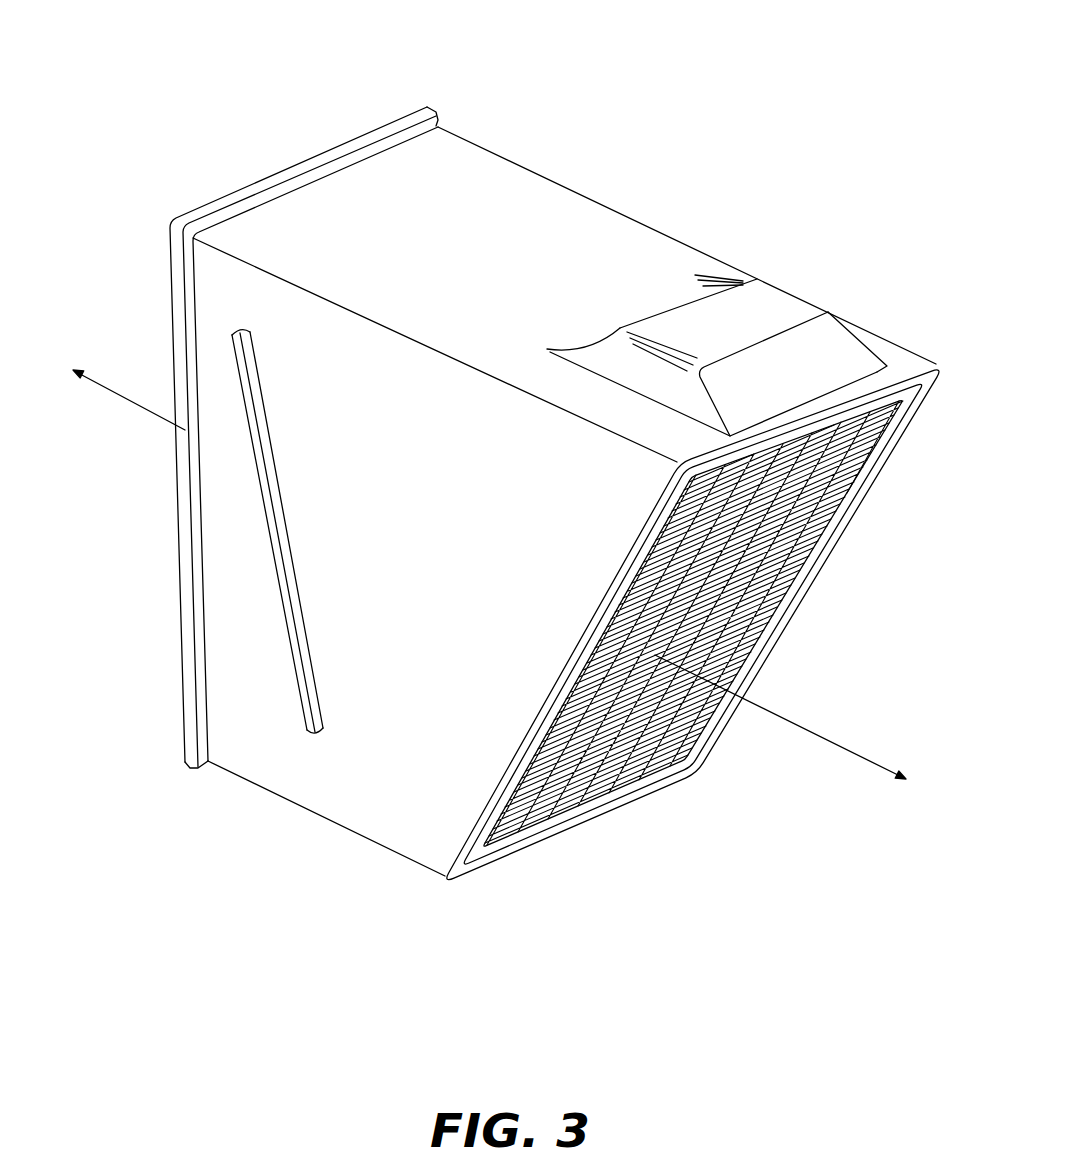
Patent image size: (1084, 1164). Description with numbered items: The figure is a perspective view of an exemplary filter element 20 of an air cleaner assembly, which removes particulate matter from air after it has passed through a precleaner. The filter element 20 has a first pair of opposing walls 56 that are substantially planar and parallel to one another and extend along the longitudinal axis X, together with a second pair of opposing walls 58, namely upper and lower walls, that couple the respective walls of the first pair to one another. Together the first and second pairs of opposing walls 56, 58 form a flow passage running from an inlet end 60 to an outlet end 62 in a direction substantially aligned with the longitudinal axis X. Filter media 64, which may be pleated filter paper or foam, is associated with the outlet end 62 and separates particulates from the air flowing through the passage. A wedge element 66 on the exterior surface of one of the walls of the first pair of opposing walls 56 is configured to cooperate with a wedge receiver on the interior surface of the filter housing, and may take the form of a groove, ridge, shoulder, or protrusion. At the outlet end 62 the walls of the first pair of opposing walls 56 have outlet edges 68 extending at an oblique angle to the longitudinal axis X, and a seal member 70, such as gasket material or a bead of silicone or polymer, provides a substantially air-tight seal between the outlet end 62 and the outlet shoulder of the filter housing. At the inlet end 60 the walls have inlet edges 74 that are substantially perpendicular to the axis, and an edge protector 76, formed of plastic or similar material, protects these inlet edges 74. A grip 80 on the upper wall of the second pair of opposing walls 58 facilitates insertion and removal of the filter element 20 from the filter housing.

The filter element 20 is at (656, 87).
The first pair of opposing walls 56 is at (711, 256).
The second pair of opposing walls 58 is at (480, 170).
The inlet end 60 is at (132, 437).
The outlet end 62 is at (784, 692).
The filter media 64 is at (663, 725).
The wedge element 66 is at (280, 482).
The outlet edges 68 is at (600, 603).
The seal member 70 is at (940, 360).
The inlet edges 74 is at (207, 658).
The edge protector 76 is at (207, 206).
The grip 80 is at (772, 302).